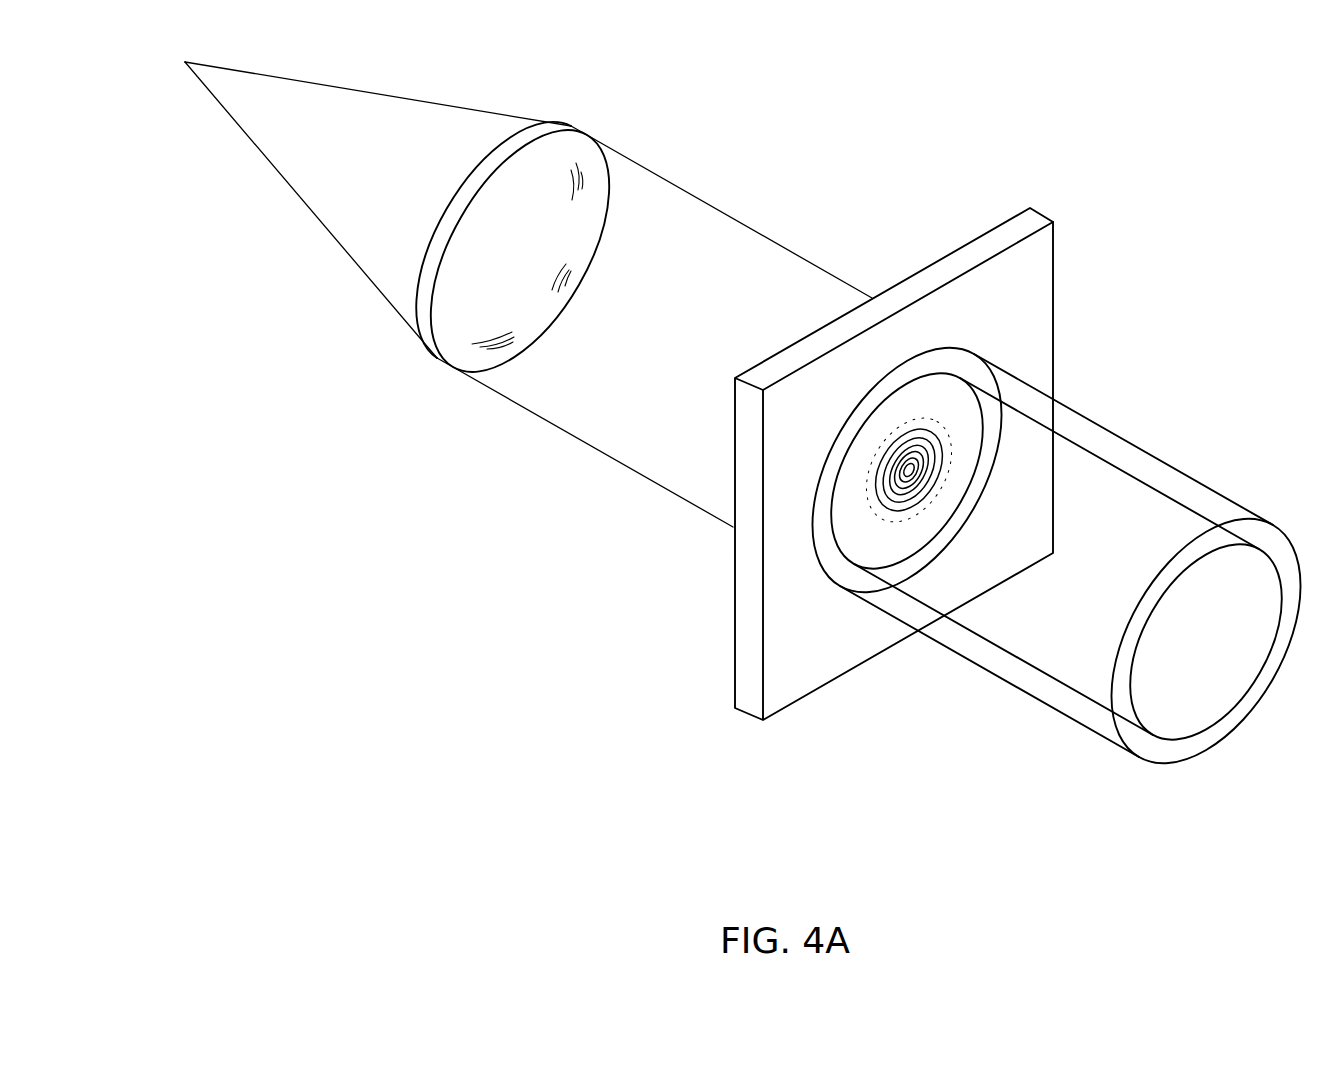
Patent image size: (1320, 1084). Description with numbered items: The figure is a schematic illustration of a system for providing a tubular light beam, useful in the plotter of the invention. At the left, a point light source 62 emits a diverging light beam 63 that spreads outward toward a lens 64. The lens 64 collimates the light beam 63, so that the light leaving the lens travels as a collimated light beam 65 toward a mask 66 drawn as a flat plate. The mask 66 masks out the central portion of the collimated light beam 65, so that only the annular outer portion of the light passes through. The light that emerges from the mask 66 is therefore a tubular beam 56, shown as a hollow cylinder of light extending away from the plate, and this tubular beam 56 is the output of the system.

The point light source 62 is at (185, 62).
The light beam 63 is at (357, 232).
The lens 64 is at (465, 335).
The collimated light beam 65 is at (630, 425).
The mask 66 is at (798, 655).
The tubular beam 56 is at (1030, 683).